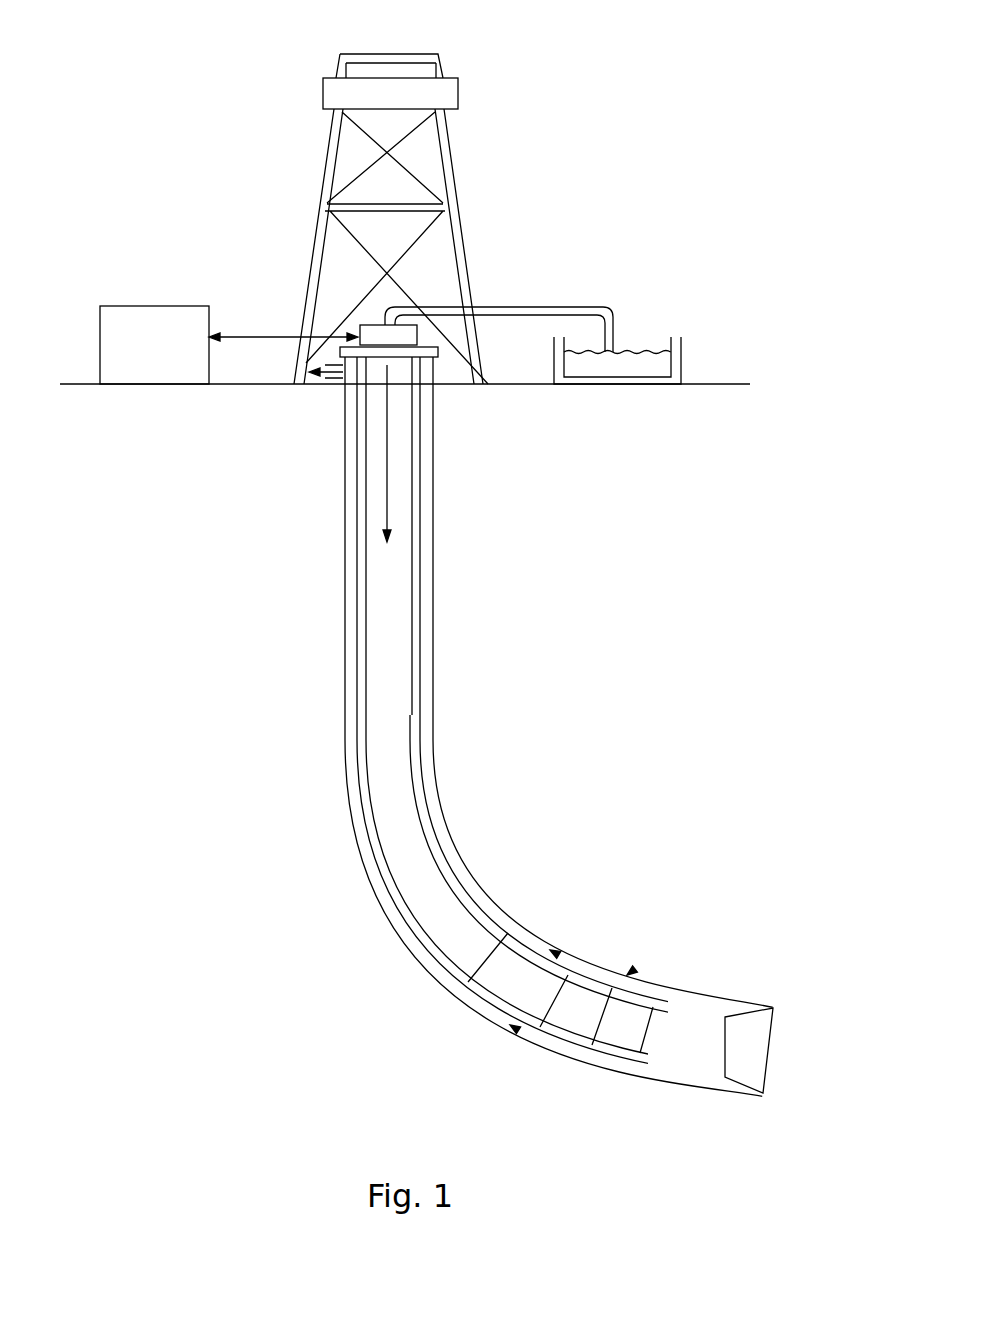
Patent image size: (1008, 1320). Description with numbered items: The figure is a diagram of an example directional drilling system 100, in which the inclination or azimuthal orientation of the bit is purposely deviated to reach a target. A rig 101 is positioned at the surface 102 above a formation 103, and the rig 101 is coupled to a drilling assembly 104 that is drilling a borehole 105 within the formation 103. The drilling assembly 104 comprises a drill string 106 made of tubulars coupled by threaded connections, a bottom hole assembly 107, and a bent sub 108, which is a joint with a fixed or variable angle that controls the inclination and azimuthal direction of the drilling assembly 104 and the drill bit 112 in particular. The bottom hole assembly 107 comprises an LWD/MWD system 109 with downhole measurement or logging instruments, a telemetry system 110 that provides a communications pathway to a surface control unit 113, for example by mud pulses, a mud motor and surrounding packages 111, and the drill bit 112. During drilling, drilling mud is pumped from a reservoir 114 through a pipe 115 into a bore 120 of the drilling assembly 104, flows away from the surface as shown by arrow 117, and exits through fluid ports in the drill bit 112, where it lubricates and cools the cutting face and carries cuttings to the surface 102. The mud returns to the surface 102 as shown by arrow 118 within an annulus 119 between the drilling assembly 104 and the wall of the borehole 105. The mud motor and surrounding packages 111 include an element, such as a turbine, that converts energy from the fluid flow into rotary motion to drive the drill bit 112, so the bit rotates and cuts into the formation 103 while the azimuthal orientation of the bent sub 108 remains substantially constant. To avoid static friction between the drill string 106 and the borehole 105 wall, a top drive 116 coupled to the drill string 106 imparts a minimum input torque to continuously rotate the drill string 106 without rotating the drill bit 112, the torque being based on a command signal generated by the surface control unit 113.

The directional drilling system 100 is at (650, 100).
The rig 101 is at (458, 96).
The surface 102 is at (706, 384).
The formation 103 is at (668, 497).
The drilling assembly 104 is at (350, 656).
The borehole 105 is at (433, 668).
The drill string 106 is at (421, 535).
The bottom hole assembly 107 is at (634, 970).
The bent sub 108 is at (540, 945).
The LWD/MWD system 109 is at (613, 1057).
The telemetry system 110 is at (558, 1040).
The mud motor and surrounding packages 111 is at (697, 1010).
The drill bit 112 is at (762, 1046).
The surface control unit 113 is at (229, 345).
The reservoir 114 is at (629, 353).
The pipe 115 is at (530, 306).
The top drive 116 is at (440, 352).
The arrow indicating drilling mud flow away from the surface 117 is at (387, 473).
The arrow indicating drilling mud flow to the surface 118 is at (493, 1025).
The annulus 119 is at (403, 937).
The bore 120 is at (400, 757).